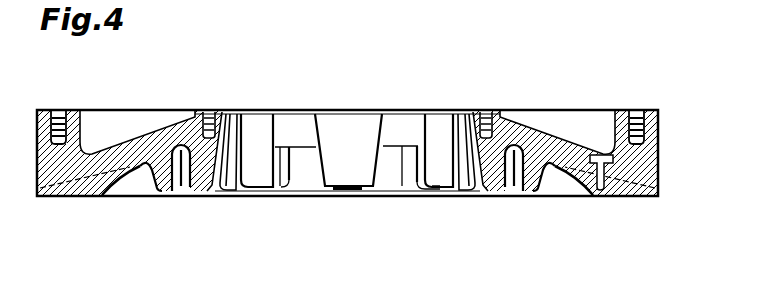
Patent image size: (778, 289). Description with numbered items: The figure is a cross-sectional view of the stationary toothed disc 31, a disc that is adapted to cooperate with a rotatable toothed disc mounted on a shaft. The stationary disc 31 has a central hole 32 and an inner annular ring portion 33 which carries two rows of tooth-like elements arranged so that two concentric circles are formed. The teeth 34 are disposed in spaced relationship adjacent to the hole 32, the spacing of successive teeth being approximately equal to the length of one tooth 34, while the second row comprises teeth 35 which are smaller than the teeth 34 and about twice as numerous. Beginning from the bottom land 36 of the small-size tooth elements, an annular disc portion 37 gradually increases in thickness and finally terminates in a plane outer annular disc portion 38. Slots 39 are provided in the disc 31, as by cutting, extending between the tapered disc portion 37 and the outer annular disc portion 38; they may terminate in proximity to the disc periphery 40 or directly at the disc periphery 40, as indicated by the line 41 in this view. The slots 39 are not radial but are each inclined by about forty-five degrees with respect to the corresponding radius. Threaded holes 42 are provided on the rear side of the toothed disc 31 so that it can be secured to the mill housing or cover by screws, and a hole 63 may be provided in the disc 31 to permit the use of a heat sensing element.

The stationary toothed disc 31 is at (573, 137).
The central hole 32 is at (438, 114).
The inner annular ring portion 33 is at (523, 150).
The teeth 34 is at (205, 177).
The teeth 35 is at (162, 192).
The bottom land 36 is at (140, 188).
The annular disc portion 37 is at (113, 190).
The outer annular disc portion 38 is at (55, 195).
The slots 39 is at (610, 188).
The disc periphery 40 is at (658, 195).
The line 41 is at (62, 182).
The threaded holes 42 is at (197, 112).
The hole 63 is at (630, 112).